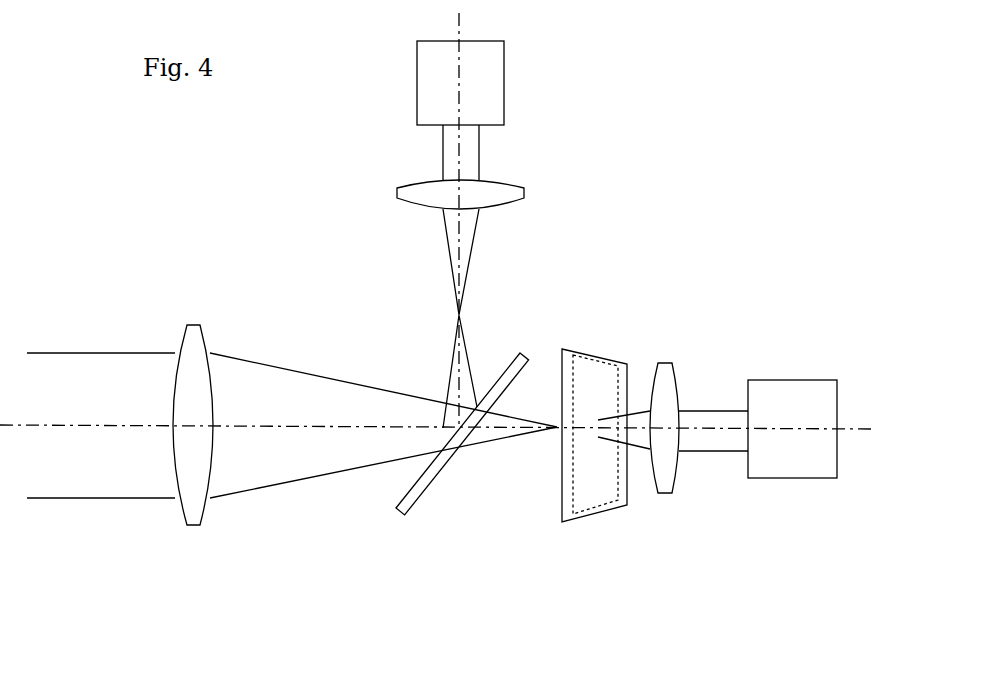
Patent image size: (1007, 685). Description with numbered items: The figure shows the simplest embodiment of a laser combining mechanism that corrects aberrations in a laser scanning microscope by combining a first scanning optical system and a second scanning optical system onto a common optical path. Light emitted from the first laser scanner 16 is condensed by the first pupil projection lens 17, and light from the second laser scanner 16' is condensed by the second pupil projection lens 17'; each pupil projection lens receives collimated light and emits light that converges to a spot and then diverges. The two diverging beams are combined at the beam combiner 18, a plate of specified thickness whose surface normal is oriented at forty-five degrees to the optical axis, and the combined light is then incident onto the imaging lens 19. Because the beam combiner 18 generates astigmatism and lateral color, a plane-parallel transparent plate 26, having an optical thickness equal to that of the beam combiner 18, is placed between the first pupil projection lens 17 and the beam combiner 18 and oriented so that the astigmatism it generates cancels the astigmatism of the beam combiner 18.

The first laser scanner 16 is at (792, 491).
The second laser scanner 16' is at (505, 83).
The first pupil projection lens 17 is at (664, 488).
The second pupil projection lens 17' is at (504, 178).
The beam combiner 18 is at (433, 480).
The imaging lens 19 is at (193, 524).
The plane-parallel transparent plate 26 is at (583, 515).